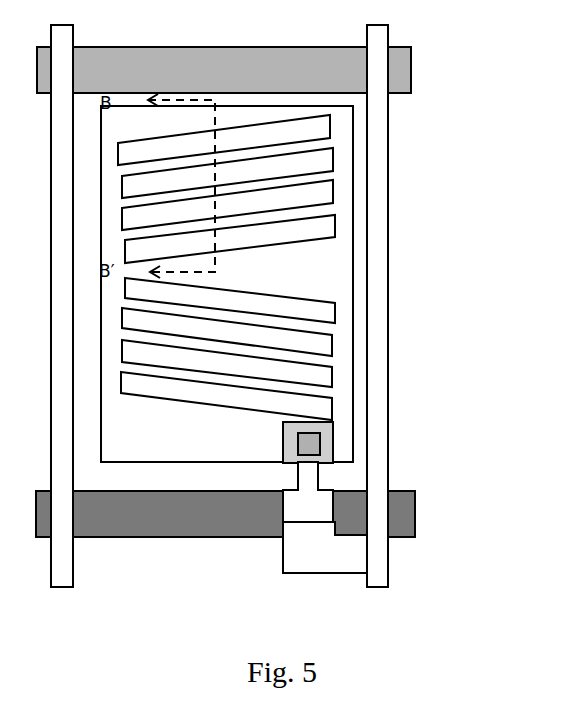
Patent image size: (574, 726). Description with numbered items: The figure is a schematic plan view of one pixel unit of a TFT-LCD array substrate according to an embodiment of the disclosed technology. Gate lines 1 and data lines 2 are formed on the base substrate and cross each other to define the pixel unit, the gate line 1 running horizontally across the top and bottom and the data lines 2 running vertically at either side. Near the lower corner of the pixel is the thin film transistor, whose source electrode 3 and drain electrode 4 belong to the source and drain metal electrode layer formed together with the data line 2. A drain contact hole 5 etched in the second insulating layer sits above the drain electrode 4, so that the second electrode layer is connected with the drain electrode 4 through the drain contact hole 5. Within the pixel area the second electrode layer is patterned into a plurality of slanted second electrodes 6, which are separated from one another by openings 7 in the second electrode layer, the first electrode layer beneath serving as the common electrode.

The gate line 1 is at (403, 73).
The data line 2 is at (378, 232).
The source electrode 3 is at (310, 557).
The drain electrode 4 is at (298, 507).
The drain contact hole 5 is at (313, 452).
The second electrode 6 is at (317, 360).
The opening in the second electrode layer 7 is at (312, 318).